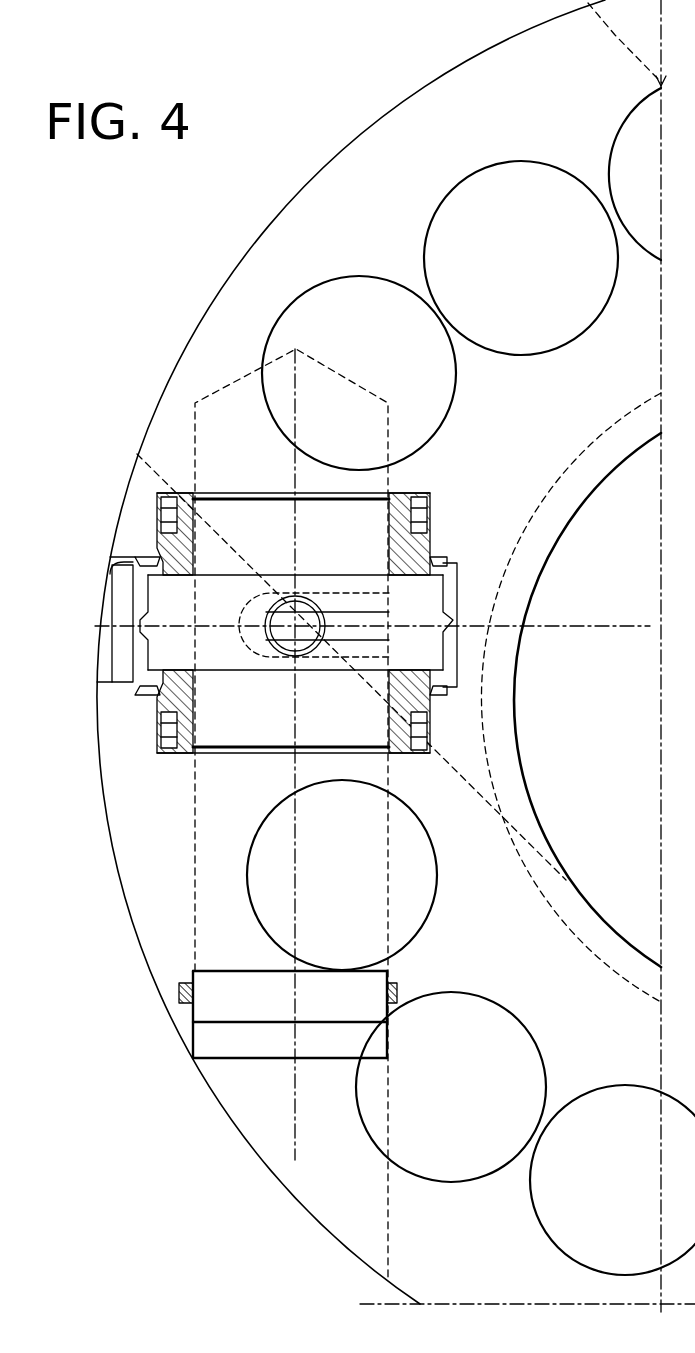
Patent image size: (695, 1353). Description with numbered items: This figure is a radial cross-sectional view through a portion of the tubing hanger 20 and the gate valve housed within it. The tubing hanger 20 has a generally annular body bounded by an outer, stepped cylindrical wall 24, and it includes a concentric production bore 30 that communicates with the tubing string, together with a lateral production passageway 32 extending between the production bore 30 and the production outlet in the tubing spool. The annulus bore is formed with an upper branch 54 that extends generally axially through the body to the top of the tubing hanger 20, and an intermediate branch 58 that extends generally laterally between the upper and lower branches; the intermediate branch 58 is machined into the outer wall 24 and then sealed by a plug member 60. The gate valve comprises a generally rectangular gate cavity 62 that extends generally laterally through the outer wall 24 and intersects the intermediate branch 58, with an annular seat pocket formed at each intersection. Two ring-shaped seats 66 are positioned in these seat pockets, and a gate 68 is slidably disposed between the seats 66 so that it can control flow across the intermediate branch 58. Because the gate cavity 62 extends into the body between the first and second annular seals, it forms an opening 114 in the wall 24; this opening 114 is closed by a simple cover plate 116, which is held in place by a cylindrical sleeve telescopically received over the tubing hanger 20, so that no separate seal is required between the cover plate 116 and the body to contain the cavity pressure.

The tubing hanger 20 is at (303, 100).
The outer stepped cylindrical wall 24 is at (127, 904).
The production bore 30 is at (513, 702).
The lateral production passageway 32 is at (612, 37).
The upper branch 54 is at (322, 291).
The intermediate branch 58 is at (196, 830).
The plug member 60 is at (210, 1013).
The gate cavity 62 is at (455, 566).
The ring-shaped seats 66 is at (153, 548).
The gate 68 is at (153, 658).
The opening 114 is at (112, 572).
The cover plate 116 is at (98, 638).